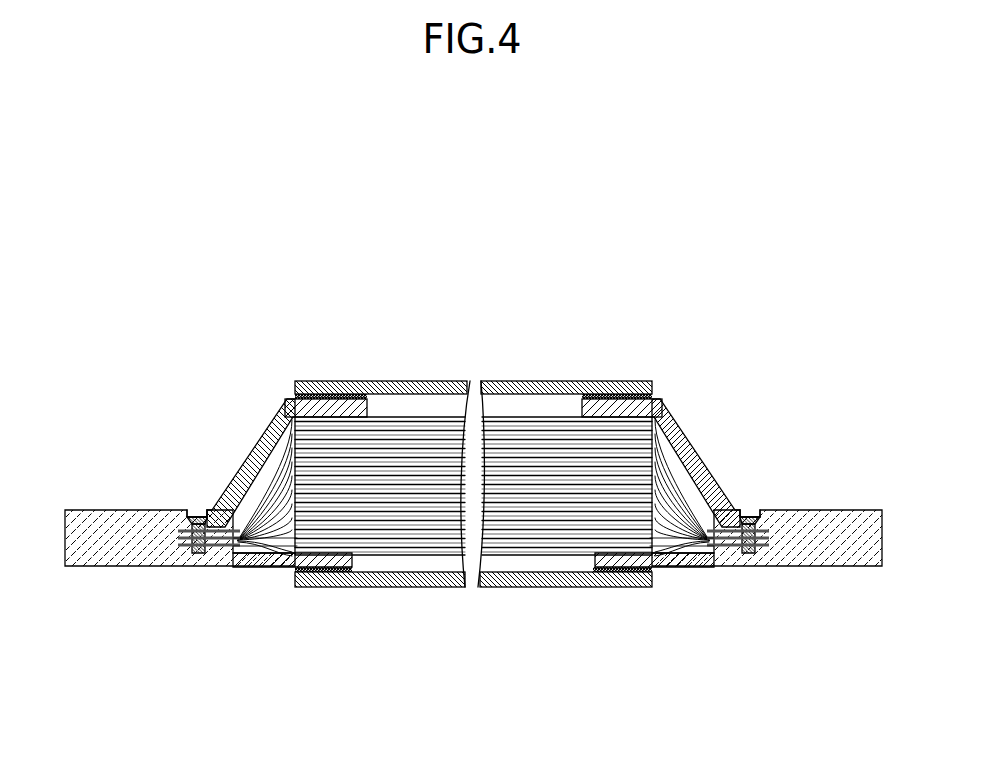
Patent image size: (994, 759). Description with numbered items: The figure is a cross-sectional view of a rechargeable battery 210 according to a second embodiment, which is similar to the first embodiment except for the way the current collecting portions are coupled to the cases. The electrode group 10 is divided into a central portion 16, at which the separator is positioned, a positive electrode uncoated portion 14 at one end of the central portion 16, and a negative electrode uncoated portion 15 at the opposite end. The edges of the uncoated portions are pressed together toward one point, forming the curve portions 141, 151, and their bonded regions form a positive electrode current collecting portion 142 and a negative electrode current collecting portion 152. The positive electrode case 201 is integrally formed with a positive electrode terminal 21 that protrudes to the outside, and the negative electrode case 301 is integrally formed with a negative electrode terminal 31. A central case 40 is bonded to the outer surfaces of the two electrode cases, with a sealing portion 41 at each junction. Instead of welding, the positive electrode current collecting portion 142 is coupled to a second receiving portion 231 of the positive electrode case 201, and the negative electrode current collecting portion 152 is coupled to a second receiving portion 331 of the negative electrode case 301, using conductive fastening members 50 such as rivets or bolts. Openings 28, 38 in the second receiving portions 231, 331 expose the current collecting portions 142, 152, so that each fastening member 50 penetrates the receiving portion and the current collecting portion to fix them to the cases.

The rechargeable battery 210 is at (507, 184).
The electrode group 10 is at (382, 573).
The positive electrode uncoated portion 14 is at (205, 680).
The curve portion 141 is at (278, 560).
The positive electrode current collecting portion 142 is at (226, 545).
The negative electrode uncoated portion 15 is at (742, 680).
The curve portion 151 is at (664, 560).
The negative electrode current collecting portion 152 is at (720, 545).
The central portion 16 is at (580, 537).
The positive electrode terminal 21 is at (85, 512).
The opening 28 is at (189, 516).
The negative electrode terminal 31 is at (858, 512).
The opening 38 is at (756, 519).
The central case 40 is at (552, 388).
The sealing portion 41 is at (320, 398).
The conductive fastening member 50 is at (197, 520).
The positive electrode case 201 is at (121, 581).
The second receiving portion 231 is at (198, 555).
The negative electrode case 301 is at (827, 581).
The second receiving portion 331 is at (750, 555).